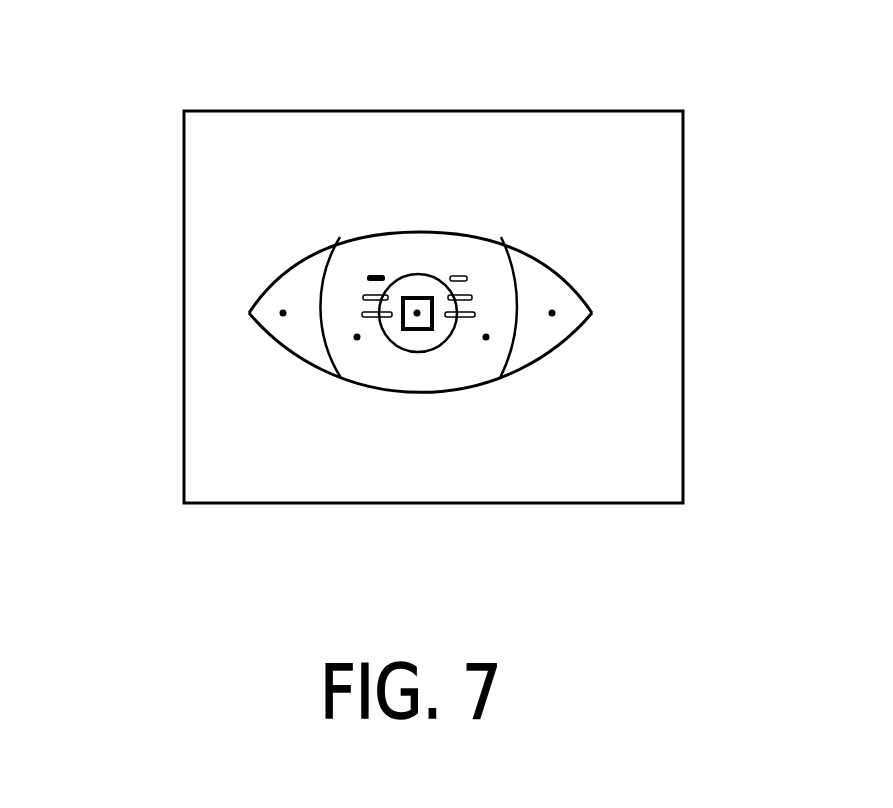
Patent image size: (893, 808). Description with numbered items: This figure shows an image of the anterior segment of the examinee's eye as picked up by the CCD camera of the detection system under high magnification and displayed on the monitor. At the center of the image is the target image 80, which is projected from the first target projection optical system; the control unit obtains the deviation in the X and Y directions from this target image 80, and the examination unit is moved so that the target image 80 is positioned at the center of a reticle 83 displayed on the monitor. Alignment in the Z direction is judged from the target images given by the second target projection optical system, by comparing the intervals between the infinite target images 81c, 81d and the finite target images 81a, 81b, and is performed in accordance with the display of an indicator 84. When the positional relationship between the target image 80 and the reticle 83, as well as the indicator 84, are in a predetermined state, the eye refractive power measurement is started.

The target image 80 is at (418, 313).
The reticle 83 is at (417, 313).
The indicator 84 is at (377, 238).
The finite target image 81a is at (486, 337).
The finite target image 81b is at (357, 337).
The infinite target image 81c is at (552, 313).
The infinite target image 81d is at (283, 313).